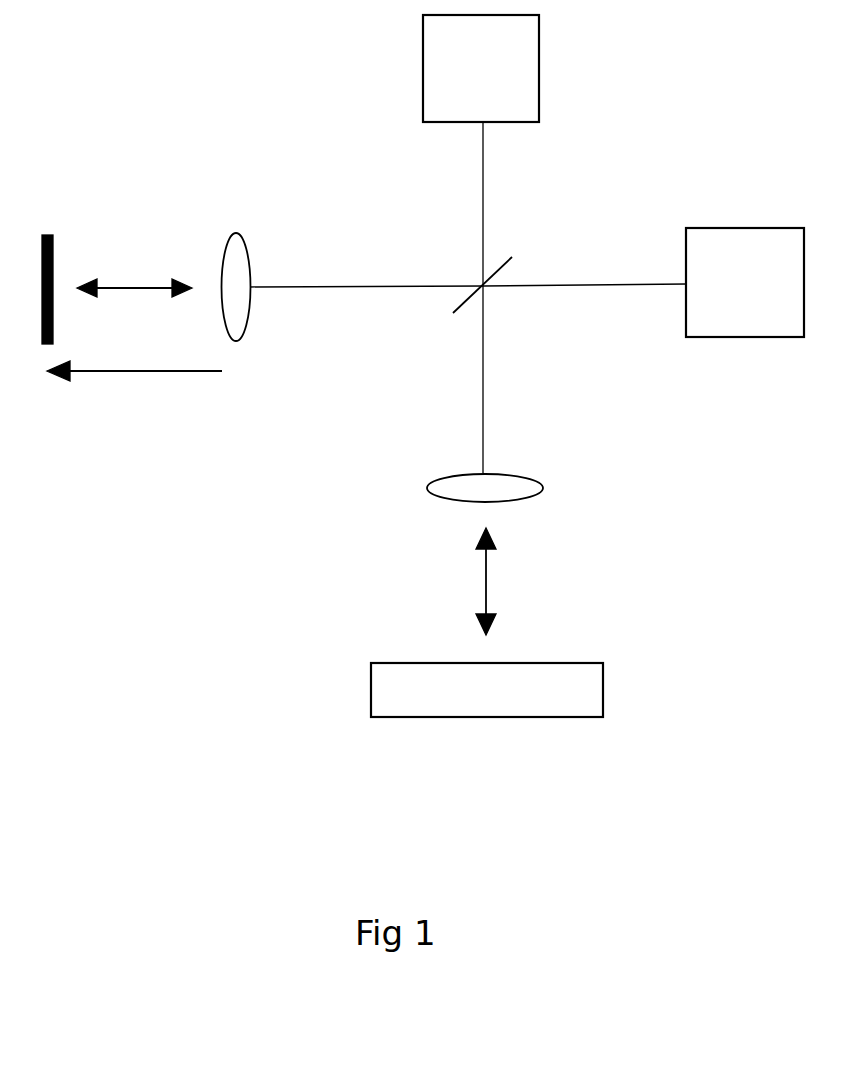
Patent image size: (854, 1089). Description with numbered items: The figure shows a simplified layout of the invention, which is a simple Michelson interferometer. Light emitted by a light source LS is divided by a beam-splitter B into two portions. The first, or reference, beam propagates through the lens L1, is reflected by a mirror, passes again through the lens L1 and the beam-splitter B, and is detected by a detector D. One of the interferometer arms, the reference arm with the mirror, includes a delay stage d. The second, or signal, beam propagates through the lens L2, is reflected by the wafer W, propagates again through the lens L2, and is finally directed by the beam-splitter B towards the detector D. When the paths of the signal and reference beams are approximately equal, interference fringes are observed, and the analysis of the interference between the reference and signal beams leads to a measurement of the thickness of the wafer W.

The light source LS is at (481, 68).
The beam-splitter B is at (502, 249).
The lens L1 is at (244, 267).
The detector D is at (745, 282).
The lens L2 is at (540, 480).
The wafer W is at (487, 690).
The delay stage d is at (134, 399).